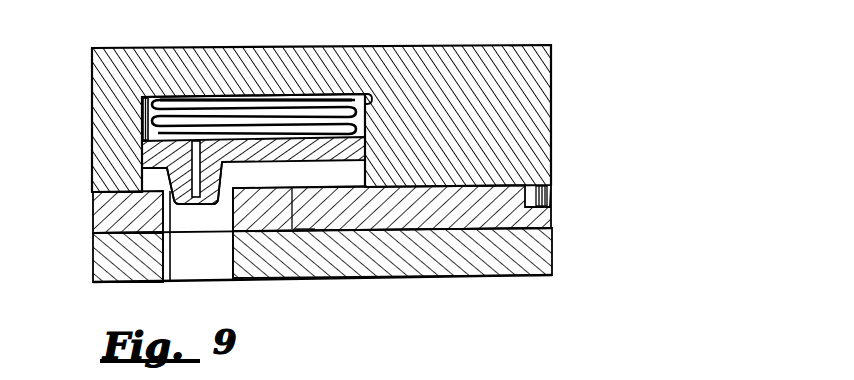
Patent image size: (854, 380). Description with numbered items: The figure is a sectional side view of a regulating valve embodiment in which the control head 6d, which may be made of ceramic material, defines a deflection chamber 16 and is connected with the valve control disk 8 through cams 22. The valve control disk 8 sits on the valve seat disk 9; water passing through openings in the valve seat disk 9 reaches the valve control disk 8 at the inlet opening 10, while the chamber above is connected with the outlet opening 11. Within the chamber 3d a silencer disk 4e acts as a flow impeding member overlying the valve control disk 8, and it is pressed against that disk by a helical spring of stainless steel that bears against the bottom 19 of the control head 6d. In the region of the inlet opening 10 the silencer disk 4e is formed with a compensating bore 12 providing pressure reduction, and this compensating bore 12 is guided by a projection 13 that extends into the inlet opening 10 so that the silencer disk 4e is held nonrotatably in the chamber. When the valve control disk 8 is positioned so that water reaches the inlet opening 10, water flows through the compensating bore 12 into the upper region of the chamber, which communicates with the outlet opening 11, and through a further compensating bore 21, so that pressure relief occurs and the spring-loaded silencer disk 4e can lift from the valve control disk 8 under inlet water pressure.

The control head 6d is at (431, 58).
The valve control disk 8 is at (322, 209).
The valve seat disk 9 is at (322, 255).
The inlet opening 10 is at (220, 222).
The outlet opening 11 is at (308, 224).
The silencer disk 4e is at (253, 170).
The projection 13 is at (224, 177).
The compensating bore 12 is at (196, 207).
The compensating bore 21 is at (314, 167).
The deflection chamber 16 is at (341, 94).
The bottom 19 is at (371, 95).
The mixing chamber 3d is at (147, 108).
The cams 22 is at (546, 197).